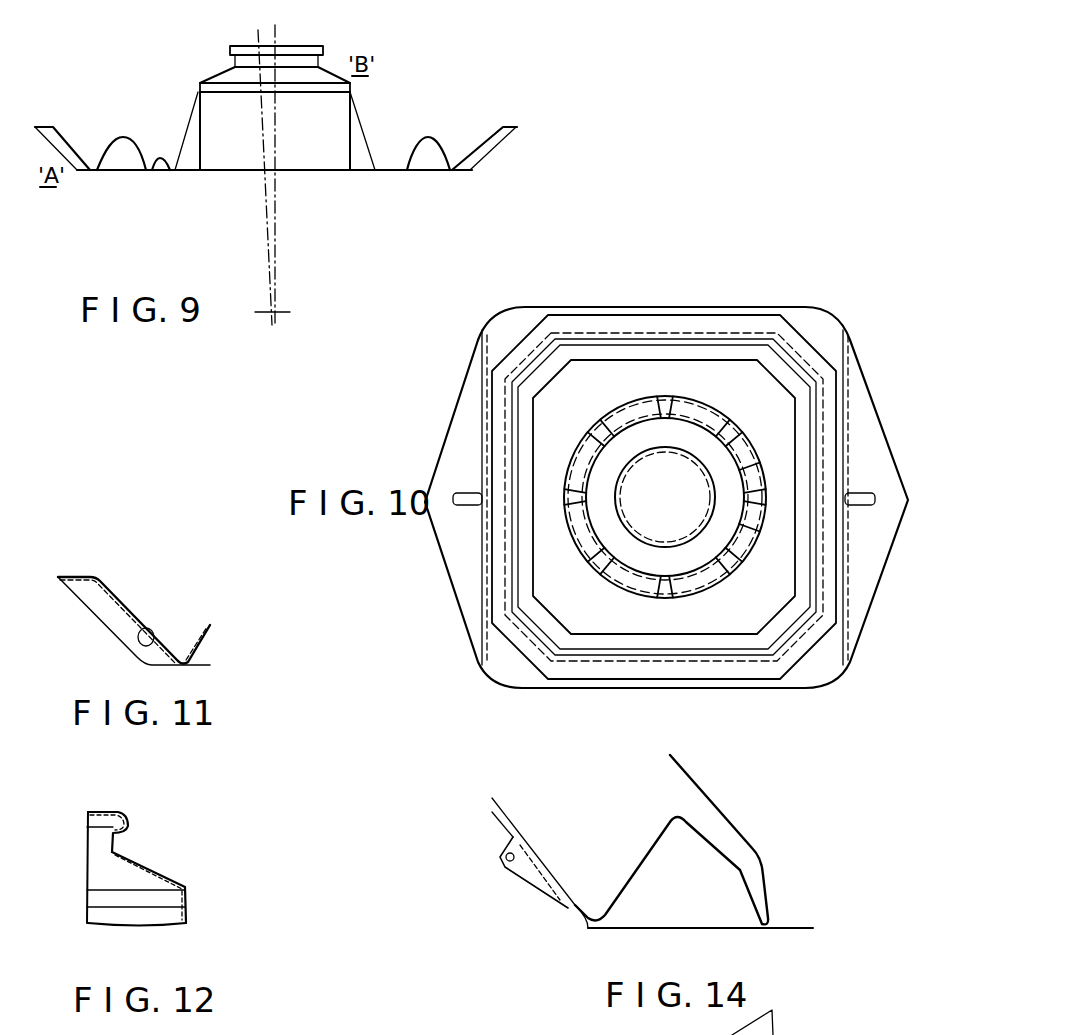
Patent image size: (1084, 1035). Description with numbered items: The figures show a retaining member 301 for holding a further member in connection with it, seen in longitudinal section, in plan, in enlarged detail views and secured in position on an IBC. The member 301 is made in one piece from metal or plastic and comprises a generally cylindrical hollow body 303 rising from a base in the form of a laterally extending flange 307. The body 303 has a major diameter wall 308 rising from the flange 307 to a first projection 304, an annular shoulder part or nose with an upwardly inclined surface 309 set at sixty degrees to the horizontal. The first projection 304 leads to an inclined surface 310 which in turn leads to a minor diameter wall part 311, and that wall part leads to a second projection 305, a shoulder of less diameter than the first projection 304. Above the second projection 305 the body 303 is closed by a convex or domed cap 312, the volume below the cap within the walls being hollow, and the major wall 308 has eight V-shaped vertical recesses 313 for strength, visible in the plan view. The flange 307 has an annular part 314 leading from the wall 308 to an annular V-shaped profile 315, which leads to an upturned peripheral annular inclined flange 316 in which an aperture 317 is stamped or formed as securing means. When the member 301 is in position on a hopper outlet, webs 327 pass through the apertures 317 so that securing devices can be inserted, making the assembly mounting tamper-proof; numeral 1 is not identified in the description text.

In FIG. 9, the closure cap 1 is at (415, 192).
In FIG. 10, the closure cap 1 is at (880, 325).
In FIG. 14, the member 301 is at (795, 936).
In FIG. 9, the body 303 is at (192, 95).
In FIG. 10, the body 303 is at (628, 434).
In FIG. 9, the first projection 304 is at (355, 84).
In FIG. 10, the first projection 304 is at (738, 452).
In FIG. 12, the first projection 304 is at (187, 887).
In FIG. 9, the second projection 305 is at (326, 52).
In FIG. 10, the second projection 305 is at (683, 450).
In FIG. 12, the second projection 305 is at (130, 822).
In FIG. 9, the flange 307 is at (382, 180).
In FIG. 10, the flange 307 is at (760, 623).
In FIG. 9, the major diameter wall 308 is at (350, 132).
In FIG. 12, the major diameter wall 308 is at (177, 923).
In FIG. 12, the upwardly inclined surface 309 is at (189, 893).
In FIG. 9, the inclined surface 310 is at (222, 74).
In FIG. 10, the inclined surface 310 is at (725, 520).
In FIG. 12, the inclined surface 310 is at (150, 864).
In FIG. 9, the minor diameter wall part 311 is at (305, 62).
In FIG. 9, the cap 312 is at (265, 46).
In FIG. 10, the cap 312 is at (686, 511).
In FIG. 9, the V-shaped vertical recesses 313 is at (362, 147).
In FIG. 10, the V-shaped vertical recesses 313 is at (602, 556).
In FIG. 9, the annular part 314 is at (150, 173).
In FIG. 9, the annular V-shaped profile 315 is at (440, 133).
In FIG. 9, the peripheral annular inclined flange 316 is at (510, 125).
In FIG. 9, the aperture 317 is at (68, 147).
In FIG. 10, the aperture 317 is at (466, 505).
In FIG. 11, the aperture 317 is at (140, 651).
In FIG. 14, the web 327 is at (527, 872).